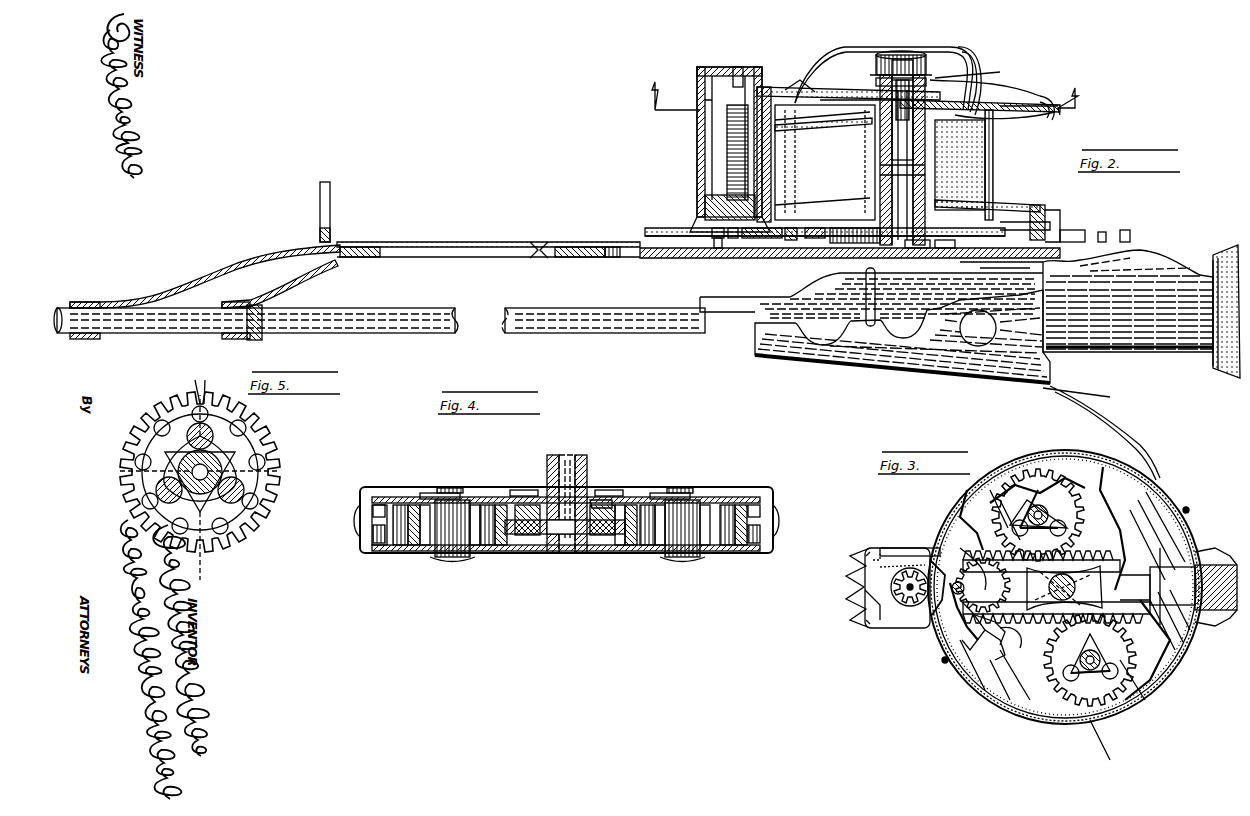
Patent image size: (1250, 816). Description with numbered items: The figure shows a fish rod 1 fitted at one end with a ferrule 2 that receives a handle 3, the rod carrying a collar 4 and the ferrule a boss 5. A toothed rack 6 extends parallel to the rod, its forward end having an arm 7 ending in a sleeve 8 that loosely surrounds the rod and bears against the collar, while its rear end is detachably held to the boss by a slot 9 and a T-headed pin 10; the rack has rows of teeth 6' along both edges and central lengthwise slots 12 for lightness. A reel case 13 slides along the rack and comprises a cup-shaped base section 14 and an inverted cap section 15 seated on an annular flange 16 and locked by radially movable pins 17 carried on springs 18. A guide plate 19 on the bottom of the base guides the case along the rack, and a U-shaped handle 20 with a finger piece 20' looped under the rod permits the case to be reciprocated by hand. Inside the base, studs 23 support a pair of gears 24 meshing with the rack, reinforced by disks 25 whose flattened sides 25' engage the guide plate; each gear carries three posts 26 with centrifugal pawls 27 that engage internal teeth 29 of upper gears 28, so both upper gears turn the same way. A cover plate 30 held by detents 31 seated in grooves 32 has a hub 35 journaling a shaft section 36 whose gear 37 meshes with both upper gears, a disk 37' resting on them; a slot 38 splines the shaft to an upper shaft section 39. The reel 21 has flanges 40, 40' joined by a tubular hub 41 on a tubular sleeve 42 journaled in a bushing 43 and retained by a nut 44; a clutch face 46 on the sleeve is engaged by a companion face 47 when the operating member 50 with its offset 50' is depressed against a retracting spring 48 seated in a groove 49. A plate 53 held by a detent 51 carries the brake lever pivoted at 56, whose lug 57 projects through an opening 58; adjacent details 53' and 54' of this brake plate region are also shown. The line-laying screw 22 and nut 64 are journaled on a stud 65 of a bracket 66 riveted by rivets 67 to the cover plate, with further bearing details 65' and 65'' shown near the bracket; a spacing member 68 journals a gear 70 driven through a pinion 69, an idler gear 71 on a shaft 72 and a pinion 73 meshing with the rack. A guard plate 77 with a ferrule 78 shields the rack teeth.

In FIG. 2, the fish rod 1 is at (500, 320).
In FIG. 2, the ferrule 2 is at (1160, 350).
In FIG. 2, the handle 3 is at (1228, 252).
In FIG. 2, the collar 4 is at (256, 338).
In FIG. 3, the collar 4 is at (1121, 748).
In FIG. 2, the boss 5 is at (1150, 255).
In FIG. 4, the boss 5 is at (795, 490).
In FIG. 2, the toothed rack 6 is at (355, 275).
In FIG. 4, the toothed rack 6 is at (566, 562).
In FIG. 3, the toothed rack 6 is at (849, 588).
In FIG. 4, the teeth 6' is at (623, 544).
In FIG. 3, the teeth 6' is at (862, 580).
In FIG. 2, the arm 7 is at (300, 272).
In FIG. 2, the sleeve 8 is at (230, 339).
In FIG. 2, the slot 9 is at (1128, 232).
In FIG. 2, the pin 10 is at (1110, 225).
In FIG. 2, the lengthwise slots 12 is at (612, 258).
In FIG. 4, the lengthwise slots 12 is at (570, 540).
In FIG. 3, the lengthwise slots 12 is at (1120, 592).
In FIG. 2, the reel case 13 is at (874, 17).
In FIG. 3, the reel case 13 is at (1165, 640).
In FIG. 2, the base section 14 is at (860, 240).
In FIG. 4, the base section 14 is at (605, 540).
In FIG. 3, the base section 14 is at (1165, 505).
In FIG. 2, the cap section 15 is at (727, 143).
In FIG. 2, the annular flange 16 is at (1072, 218).
In FIG. 4, the annular flange 16 is at (755, 490).
In FIG. 3, the annular flange 16 is at (1140, 472).
In FIG. 3, the locking pins 17 is at (944, 664).
In FIG. 3, the springs 18 is at (1105, 470).
In FIG. 2, the guide plate 19 is at (1046, 262).
In FIG. 4, the guide plate 19 is at (560, 535).
In FIG. 3, the guide plate 19 is at (1205, 565).
In FIG. 2, the handle 20 is at (902, 345).
In FIG. 2, the finger piece 20' is at (1101, 433).
In FIG. 2, the line reel 21 is at (940, 128).
In FIG. 2, the operating screw 22 is at (712, 124).
In FIG. 3, the operating screw 22 is at (905, 600).
In FIG. 5, the studs 23 is at (225, 450).
In FIG. 4, the studs 23 is at (567, 531).
In FIG. 3, the studs 23 is at (1025, 500).
In FIG. 2, the gears 24 is at (830, 240).
In FIG. 4, the gears 24 is at (760, 534).
In FIG. 3, the gears 24 is at (1060, 520).
In FIG. 4, the disks 25 is at (571, 544).
In FIG. 4, the flattened sides 25' is at (577, 544).
In FIG. 5, the posts 26 is at (206, 404).
In FIG. 4, the posts 26 is at (706, 545).
In FIG. 3, the posts 26 is at (1012, 530).
In FIG. 5, the pawls 27 is at (160, 470).
In FIG. 4, the pawls 27 is at (728, 503).
In FIG. 3, the pawls 27 is at (1010, 512).
In FIG. 2, the gears 28 is at (840, 228).
In FIG. 5, the gears 28 is at (188, 400).
In FIG. 4, the gears 28 is at (760, 510).
In FIG. 3, the gears 28 is at (1040, 468).
In FIG. 5, the internal teeth 29 is at (248, 436).
In FIG. 2, the cover plate 30 is at (1048, 218).
In FIG. 4, the cover plate 30 is at (385, 497).
In FIG. 3, the cover plate 30 is at (1180, 575).
In FIG. 2, the detents 31 is at (620, 237).
In FIG. 4, the detents 31 is at (695, 493).
In FIG. 4, the annular groove 32 is at (682, 488).
In FIG. 2, the hub 35 is at (945, 200).
In FIG. 4, the hub 35 is at (600, 500).
In FIG. 2, the shaft section 36 is at (926, 180).
In FIG. 4, the shaft section 36 is at (582, 455).
In FIG. 2, the gear 37 is at (917, 271).
In FIG. 3, the gear 37 is at (1080, 566).
In FIG. 2, the disk 37' is at (950, 271).
In FIG. 4, the disk 37' is at (585, 479).
In FIG. 3, the disk 37' is at (1087, 584).
In FIG. 2, the slot 38 is at (892, 148).
In FIG. 2, the shaft section 39 is at (895, 125).
In FIG. 2, the lower flange 40 is at (1025, 212).
In FIG. 2, the upper flange 40' is at (1005, 121).
In FIG. 2, the tubular hub 41 is at (940, 146).
In FIG. 2, the tubular sleeve 42 is at (880, 170).
In FIG. 2, the bushing 43 is at (886, 72).
In FIG. 2, the nut 44 is at (836, 118).
In FIG. 2, the clutch face 46 is at (915, 85).
In FIG. 2, the clutch face 47 is at (922, 78).
In FIG. 2, the retracting spring 48 is at (1000, 98).
In FIG. 2, the annular groove 49 is at (900, 53).
In FIG. 2, the operating member 50 is at (884, 69).
In FIG. 2, the offset 50' is at (967, 64).
In FIG. 2, the detent 51 is at (812, 120).
In FIG. 2, the plate 53 is at (860, 84).
In FIG. 2, the lever 53' is at (1051, 101).
In FIG. 2, the rod 54' is at (1054, 94).
In FIG. 2, the pivot 56 is at (990, 165).
In FIG. 2, the lug 57 is at (985, 78).
In FIG. 2, the opening 58 is at (968, 50).
In FIG. 2, the nut 64 is at (710, 206).
In FIG. 2, the end-thrust bearing stud 65 is at (729, 251).
In FIG. 2, the bolt 65' is at (746, 67).
In FIG. 2, the bolt 65'' is at (795, 71).
In FIG. 2, the U-shaped bracket 66 is at (716, 240).
In FIG. 3, the U-shaped bracket 66 is at (875, 610).
In FIG. 2, the rivets 67 is at (790, 228).
In FIG. 2, the spacing member 68 is at (785, 262).
In FIG. 3, the spacing member 68 is at (932, 615).
In FIG. 2, the pinion 69 is at (718, 260).
In FIG. 3, the pinion 69 is at (912, 606).
In FIG. 2, the gear 70 is at (760, 240).
In FIG. 3, the gear 70 is at (960, 560).
In FIG. 3, the idler gear 71 is at (975, 655).
In FIG. 3, the upright shaft 72 is at (1000, 652).
In FIG. 3, the pinion 73 is at (1012, 636).
In FIG. 2, the guard plate 77 is at (540, 241).
In FIG. 2, the ferrule 78 is at (85, 339).